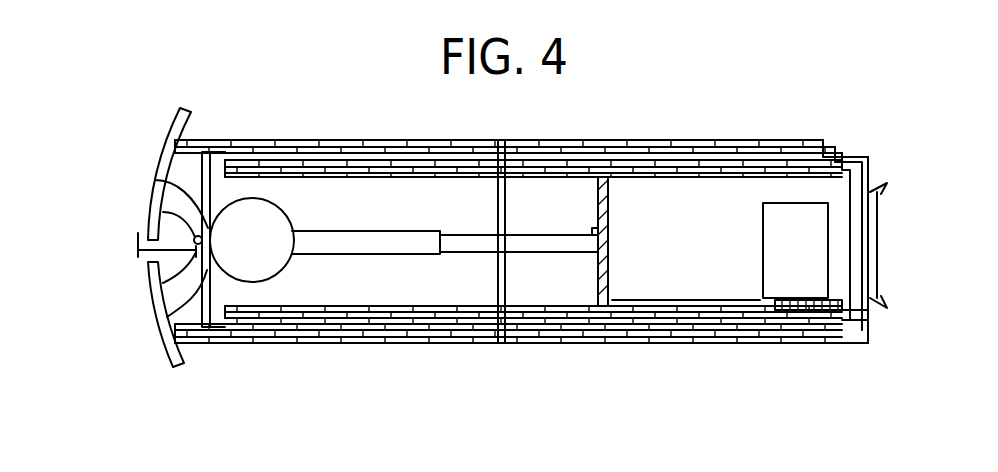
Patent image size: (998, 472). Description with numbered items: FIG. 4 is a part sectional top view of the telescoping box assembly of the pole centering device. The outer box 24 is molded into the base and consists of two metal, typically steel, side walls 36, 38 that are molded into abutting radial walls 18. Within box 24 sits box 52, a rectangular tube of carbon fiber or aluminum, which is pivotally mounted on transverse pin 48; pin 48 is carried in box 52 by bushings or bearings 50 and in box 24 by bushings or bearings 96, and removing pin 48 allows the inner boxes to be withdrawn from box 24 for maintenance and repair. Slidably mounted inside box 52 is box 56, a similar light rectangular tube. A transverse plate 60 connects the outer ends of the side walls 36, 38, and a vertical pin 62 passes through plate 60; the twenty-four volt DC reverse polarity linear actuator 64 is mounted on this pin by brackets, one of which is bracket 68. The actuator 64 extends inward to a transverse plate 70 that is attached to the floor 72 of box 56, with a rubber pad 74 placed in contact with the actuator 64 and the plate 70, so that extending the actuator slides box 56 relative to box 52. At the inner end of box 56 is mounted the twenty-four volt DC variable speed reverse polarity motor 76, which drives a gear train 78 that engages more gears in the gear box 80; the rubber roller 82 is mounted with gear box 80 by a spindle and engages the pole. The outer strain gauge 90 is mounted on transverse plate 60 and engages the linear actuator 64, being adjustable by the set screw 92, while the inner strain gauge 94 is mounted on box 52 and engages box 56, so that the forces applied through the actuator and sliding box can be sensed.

The radial walls 18 is at (593, 148).
The box 24 is at (843, 156).
The side wall 36 is at (697, 150).
The side wall 38 is at (670, 333).
The transverse pin 48 is at (505, 243).
The bushing or bearing 50 is at (498, 175).
The box 52 is at (868, 157).
The box 56 is at (795, 177).
The transverse plate 60 is at (153, 330).
The vertical pin 62 is at (163, 210).
The linear actuator 64 is at (275, 219).
The bracket 68 is at (163, 188).
The transverse plate 70 is at (611, 233).
The floor 72 is at (708, 292).
The rubber pad 74 is at (597, 220).
The motor 76 is at (790, 278).
The gear train 78 is at (813, 312).
The gear box 80 is at (858, 197).
The roller 82 is at (885, 195).
The outer strain gauge 90 is at (163, 283).
The set screw 92 is at (136, 247).
The inner strain gauge 94 is at (235, 153).
The bushing or bearing 96 is at (512, 145).